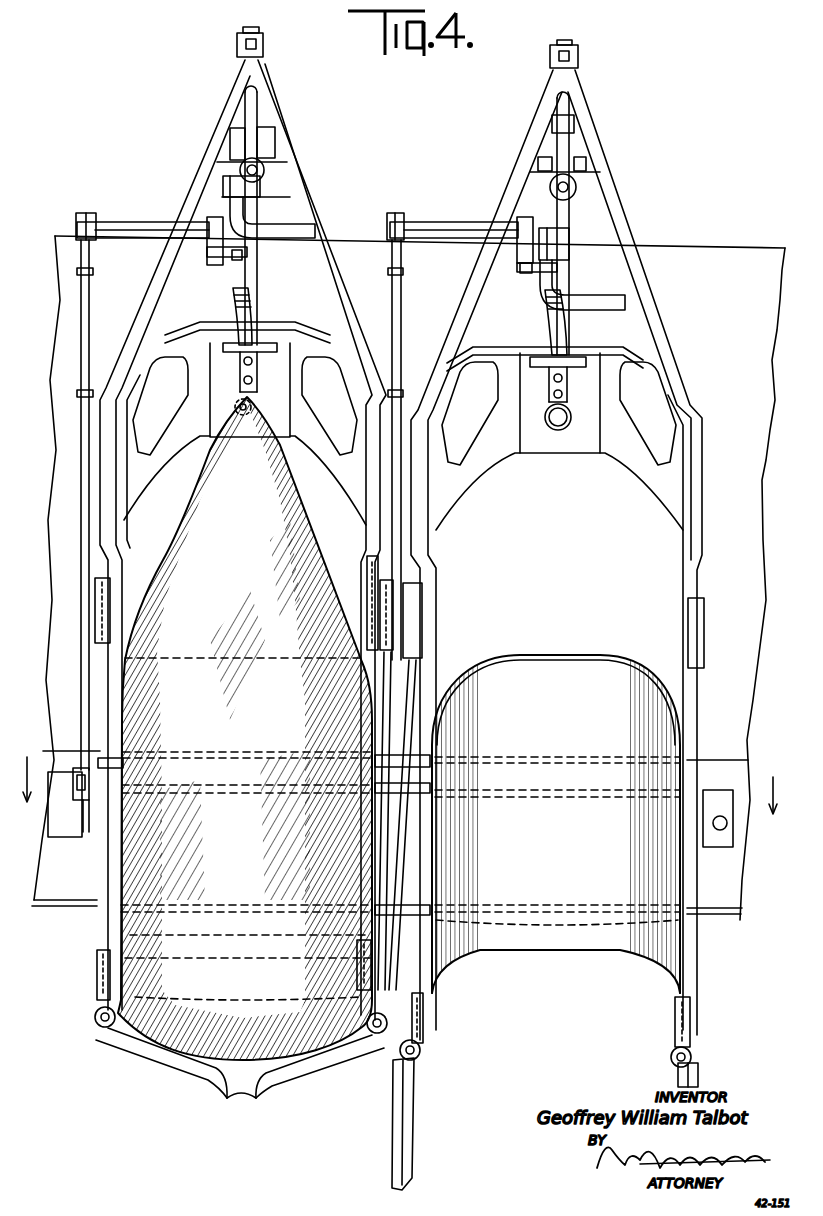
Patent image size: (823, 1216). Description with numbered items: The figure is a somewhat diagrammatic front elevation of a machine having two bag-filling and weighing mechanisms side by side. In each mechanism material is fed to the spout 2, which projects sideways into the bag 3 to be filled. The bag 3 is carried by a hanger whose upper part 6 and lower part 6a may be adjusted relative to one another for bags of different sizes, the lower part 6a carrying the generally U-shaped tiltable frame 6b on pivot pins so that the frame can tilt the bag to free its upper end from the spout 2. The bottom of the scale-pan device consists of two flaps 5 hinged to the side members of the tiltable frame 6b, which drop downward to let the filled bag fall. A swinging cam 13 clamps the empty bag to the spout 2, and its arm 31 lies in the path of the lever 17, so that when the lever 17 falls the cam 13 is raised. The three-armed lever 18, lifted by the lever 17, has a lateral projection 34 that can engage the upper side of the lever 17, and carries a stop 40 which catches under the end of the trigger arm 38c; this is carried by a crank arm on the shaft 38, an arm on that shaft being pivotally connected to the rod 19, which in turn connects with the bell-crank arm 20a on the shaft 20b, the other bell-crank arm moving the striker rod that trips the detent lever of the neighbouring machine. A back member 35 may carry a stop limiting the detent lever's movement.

The spout 2 is at (244, 418).
The bag 3 is at (300, 527).
The flaps 5 is at (714, 1081).
The upper part of the hanger 6 is at (135, 336).
The lower part of the hanger 6a is at (106, 688).
The tiltable frame 6b is at (218, 962).
The swinging cam 13 is at (256, 376).
The lever 17 is at (288, 240).
The three-armed lever 18 is at (258, 209).
The rod 19 is at (91, 296).
The bell-crank arm 20a is at (65, 817).
The shaft 20b is at (90, 780).
The arm of the cam 31 is at (233, 292).
The lateral projection 34 is at (228, 180).
The back member 35 is at (118, 893).
The shaft 38 is at (133, 220).
The trigger arm 38c is at (222, 263).
The stop 40 is at (243, 259).